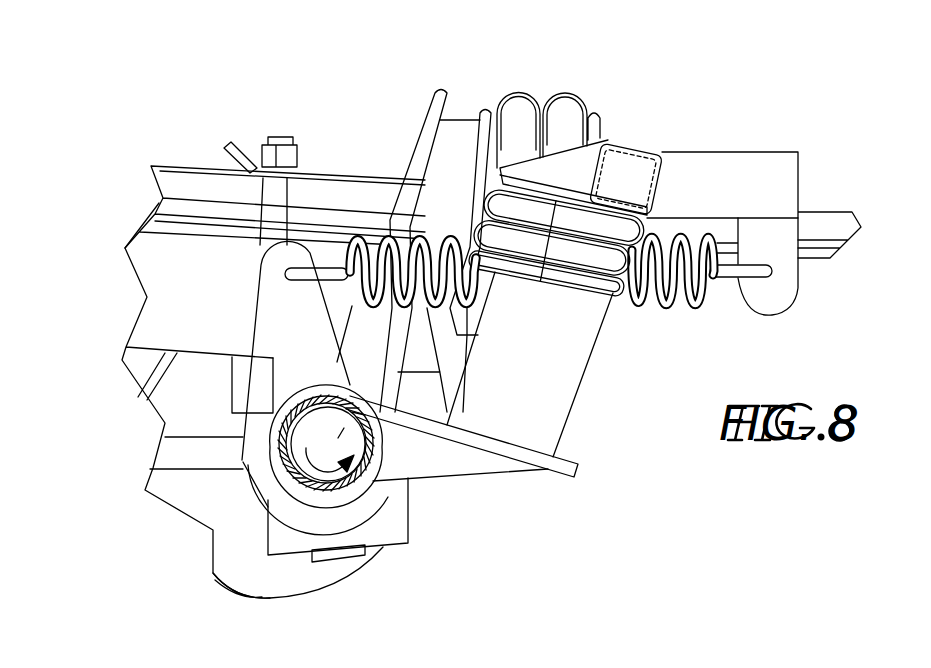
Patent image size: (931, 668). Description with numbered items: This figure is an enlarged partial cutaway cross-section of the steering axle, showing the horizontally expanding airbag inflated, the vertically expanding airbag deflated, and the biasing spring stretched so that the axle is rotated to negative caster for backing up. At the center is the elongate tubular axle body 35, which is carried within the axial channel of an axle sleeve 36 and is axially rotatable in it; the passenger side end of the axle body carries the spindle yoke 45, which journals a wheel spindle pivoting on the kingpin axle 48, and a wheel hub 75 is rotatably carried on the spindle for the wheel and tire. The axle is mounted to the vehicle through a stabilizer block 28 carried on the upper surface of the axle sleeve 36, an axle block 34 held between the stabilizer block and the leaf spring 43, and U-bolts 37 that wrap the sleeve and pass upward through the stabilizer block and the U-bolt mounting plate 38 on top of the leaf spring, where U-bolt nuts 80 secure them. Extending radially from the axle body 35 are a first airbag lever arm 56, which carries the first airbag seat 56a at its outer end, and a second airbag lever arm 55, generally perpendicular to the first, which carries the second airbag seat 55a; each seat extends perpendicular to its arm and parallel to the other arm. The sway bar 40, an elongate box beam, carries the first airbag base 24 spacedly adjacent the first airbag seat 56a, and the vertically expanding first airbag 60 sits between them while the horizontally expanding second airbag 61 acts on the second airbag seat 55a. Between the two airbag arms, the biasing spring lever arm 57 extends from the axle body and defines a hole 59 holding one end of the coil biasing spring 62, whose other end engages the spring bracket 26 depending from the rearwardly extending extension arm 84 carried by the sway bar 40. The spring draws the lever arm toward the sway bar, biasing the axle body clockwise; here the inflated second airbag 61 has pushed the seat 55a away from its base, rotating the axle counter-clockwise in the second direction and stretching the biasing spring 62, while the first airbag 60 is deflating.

The first airbag base 24 is at (582, 172).
The spring bracket 26 is at (787, 268).
The stabilizer block 28 is at (250, 390).
The axle block 34 is at (192, 297).
The tubular axle body 35 is at (350, 493).
The axle sleeve 36 is at (275, 468).
The U-bolt 37 is at (275, 500).
The U-bolt mounting plate 38 is at (318, 175).
The sway bar 40 is at (645, 145).
The leaf spring 43 is at (178, 187).
The passenger side spindle yoke 45 is at (280, 538).
The kingpin axle 48 is at (333, 560).
The second airbag lever arm 55 is at (412, 168).
The second airbag seat 55a is at (455, 150).
The first airbag lever arm 56 is at (487, 462).
The first airbag seat 56a is at (543, 393).
The biasing spring lever arm 57 is at (300, 340).
The hole 59 is at (288, 264).
The first airbag 60 is at (578, 265).
The second airbag 61 is at (520, 120).
The biasing spring 62 is at (693, 300).
The wheel hub 75 is at (245, 567).
The U-bolt nut 80 is at (272, 137).
The extension arm 84 is at (743, 170).